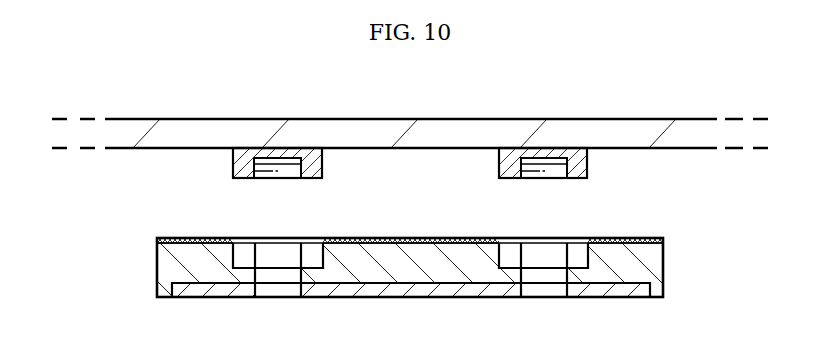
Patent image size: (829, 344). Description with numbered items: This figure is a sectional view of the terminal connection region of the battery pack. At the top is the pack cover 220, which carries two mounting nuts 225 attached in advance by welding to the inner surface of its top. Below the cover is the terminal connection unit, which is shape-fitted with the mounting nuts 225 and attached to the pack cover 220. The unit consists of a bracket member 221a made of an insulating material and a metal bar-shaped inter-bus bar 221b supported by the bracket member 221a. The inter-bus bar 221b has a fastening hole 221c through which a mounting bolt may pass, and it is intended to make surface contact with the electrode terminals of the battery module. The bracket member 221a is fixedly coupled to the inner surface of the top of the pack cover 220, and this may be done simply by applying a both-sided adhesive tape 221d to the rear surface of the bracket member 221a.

The pack cover 220 is at (461, 119).
The mounting nut 225 is at (587, 165).
The bracket member 221a is at (663, 268).
The inter-bus bar 221b is at (442, 292).
The fastening hole 221c is at (540, 292).
The both-sided adhesive tape 221d is at (641, 238).